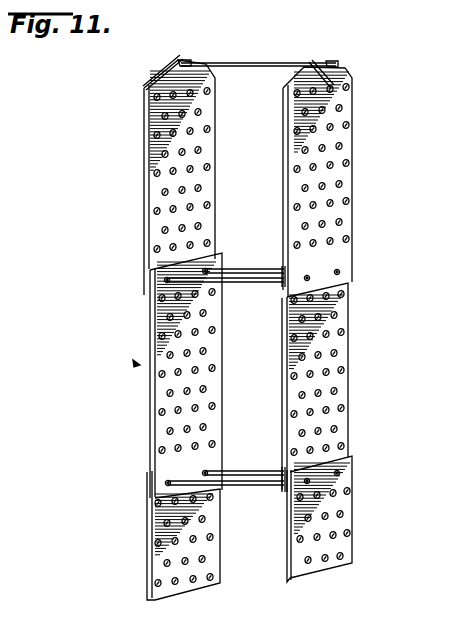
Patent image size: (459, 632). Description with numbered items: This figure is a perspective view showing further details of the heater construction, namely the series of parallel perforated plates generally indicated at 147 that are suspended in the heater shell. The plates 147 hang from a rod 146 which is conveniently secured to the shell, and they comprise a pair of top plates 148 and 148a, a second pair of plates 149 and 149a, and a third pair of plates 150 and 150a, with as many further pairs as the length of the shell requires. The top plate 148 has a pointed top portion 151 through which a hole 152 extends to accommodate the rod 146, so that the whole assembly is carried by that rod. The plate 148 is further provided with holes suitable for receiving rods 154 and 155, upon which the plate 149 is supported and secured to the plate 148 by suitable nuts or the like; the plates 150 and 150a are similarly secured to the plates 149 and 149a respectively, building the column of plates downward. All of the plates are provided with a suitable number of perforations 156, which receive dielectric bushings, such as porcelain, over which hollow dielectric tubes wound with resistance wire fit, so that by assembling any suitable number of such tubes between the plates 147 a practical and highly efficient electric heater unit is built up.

The rod 146 is at (263, 62).
The perforated plates 147 is at (138, 364).
The top plate 148 is at (155, 168).
The top plate 148a is at (336, 118).
The plate 149 is at (163, 401).
The plate 149a is at (337, 357).
The plate 150 is at (163, 535).
The plate 150a is at (345, 522).
The pointed top portion 151 is at (160, 73).
The hole 152 is at (182, 63).
The rod 154 is at (247, 281).
The rod 155 is at (253, 269).
The perforations 156 is at (208, 165).